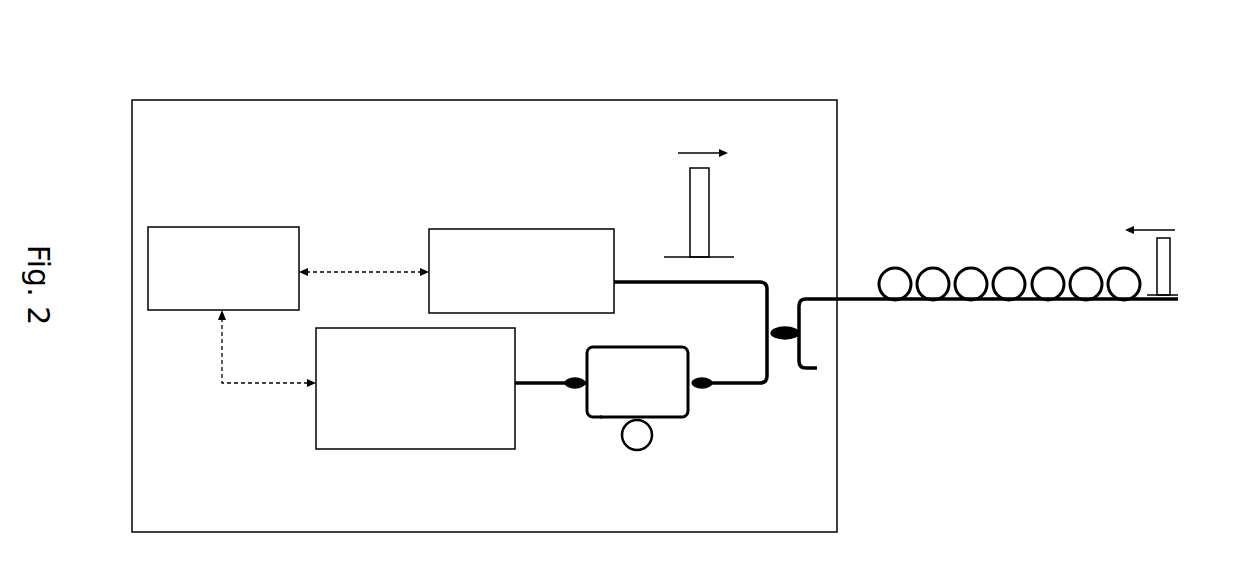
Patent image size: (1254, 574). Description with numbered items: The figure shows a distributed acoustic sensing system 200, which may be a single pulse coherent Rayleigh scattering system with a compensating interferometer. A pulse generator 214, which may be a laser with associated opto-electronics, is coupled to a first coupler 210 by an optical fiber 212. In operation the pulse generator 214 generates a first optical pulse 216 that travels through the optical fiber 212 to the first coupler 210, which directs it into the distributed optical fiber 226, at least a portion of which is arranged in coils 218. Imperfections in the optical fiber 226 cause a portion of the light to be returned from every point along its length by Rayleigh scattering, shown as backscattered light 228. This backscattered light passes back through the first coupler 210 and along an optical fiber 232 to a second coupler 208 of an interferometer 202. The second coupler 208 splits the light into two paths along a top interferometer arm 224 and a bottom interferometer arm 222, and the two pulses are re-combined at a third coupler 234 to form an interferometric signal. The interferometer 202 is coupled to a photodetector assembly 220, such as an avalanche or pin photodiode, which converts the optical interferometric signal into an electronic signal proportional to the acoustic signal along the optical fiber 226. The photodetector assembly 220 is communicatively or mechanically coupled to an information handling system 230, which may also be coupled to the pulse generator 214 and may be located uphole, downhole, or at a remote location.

The distributed acoustic sensing system 200 is at (995, 55).
The interferometer 202 is at (673, 433).
The second coupler 208 is at (705, 390).
The first coupler 210 is at (785, 327).
The optical fiber 212 is at (757, 283).
The pulse generator 214 is at (517, 229).
The first optical pulse 216 is at (710, 197).
The coils 218 is at (1020, 236).
The photodetector assembly 220 is at (410, 450).
The bottom interferometer arm 222 is at (600, 418).
The top interferometer arm 224 is at (638, 347).
The distributed optical fiber 226 is at (1147, 303).
The backscattered light 228 is at (1172, 268).
The information handling system 230 is at (220, 227).
The optical fiber 232 is at (745, 386).
The third coupler 234 is at (570, 388).